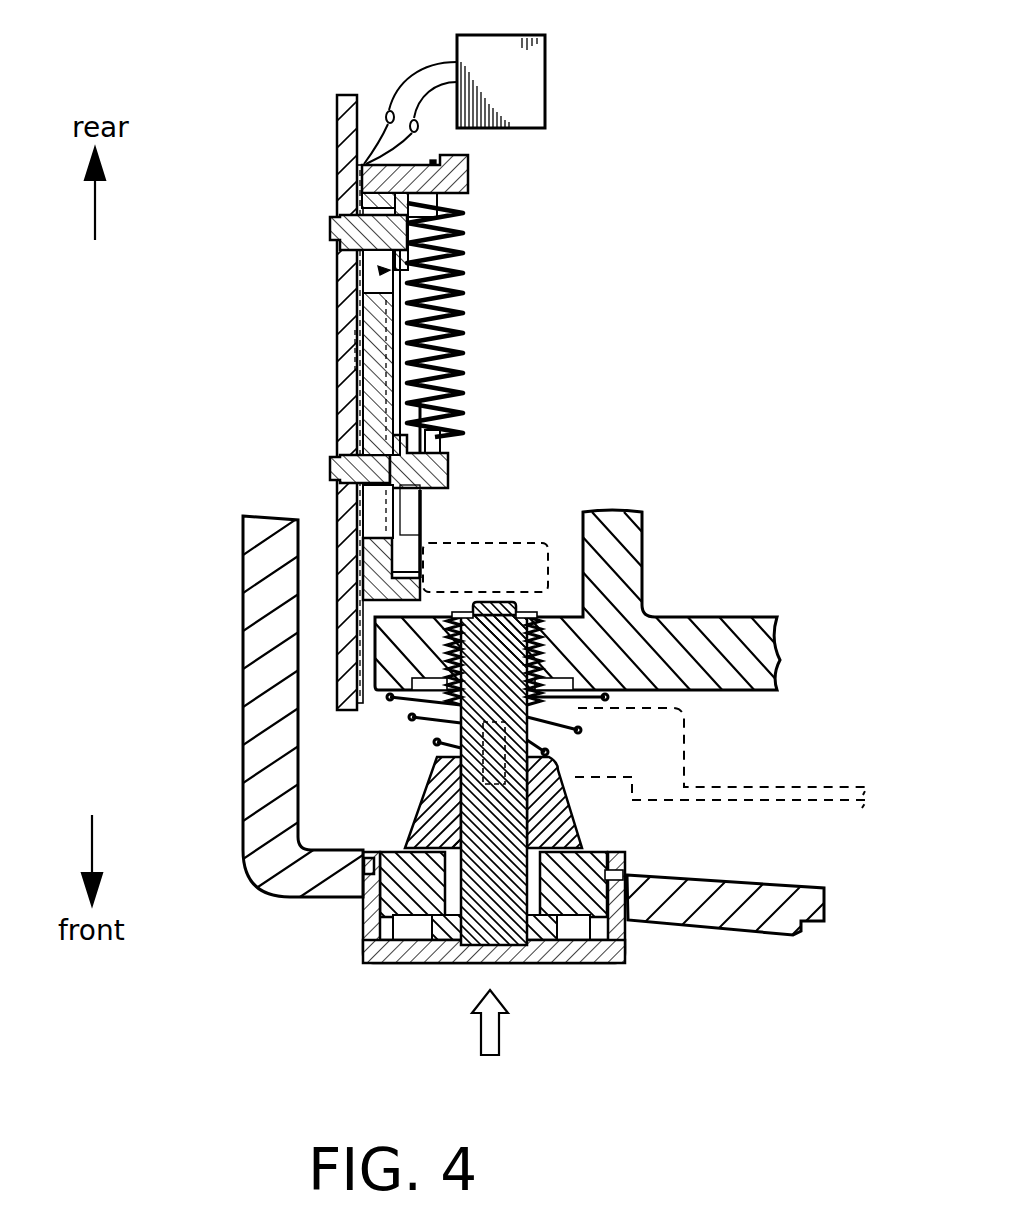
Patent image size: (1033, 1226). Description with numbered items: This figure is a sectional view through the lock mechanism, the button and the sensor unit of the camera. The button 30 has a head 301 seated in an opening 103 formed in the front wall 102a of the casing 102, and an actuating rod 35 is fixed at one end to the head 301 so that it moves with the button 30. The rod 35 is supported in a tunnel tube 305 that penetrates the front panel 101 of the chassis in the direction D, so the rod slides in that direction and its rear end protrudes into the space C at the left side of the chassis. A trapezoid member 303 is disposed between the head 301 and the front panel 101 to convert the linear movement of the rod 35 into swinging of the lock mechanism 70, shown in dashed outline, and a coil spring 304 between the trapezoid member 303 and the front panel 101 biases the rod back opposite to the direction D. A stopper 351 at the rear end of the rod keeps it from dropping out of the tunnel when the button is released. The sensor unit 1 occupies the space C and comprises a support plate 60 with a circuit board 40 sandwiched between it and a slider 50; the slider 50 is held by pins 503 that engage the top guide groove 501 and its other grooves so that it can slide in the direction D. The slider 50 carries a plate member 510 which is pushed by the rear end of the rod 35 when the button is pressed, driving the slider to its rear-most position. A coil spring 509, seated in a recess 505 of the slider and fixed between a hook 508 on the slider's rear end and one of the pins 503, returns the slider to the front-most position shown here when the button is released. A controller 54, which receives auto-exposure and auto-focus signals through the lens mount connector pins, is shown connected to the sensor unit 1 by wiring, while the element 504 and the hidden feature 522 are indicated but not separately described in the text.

The sensor unit 1 is at (110, 488).
The button 30 is at (445, 798).
The actuating rod 35 is at (518, 885).
The circuit board 40 is at (345, 390).
The slider 50 is at (532, 158).
The controller 54 is at (547, 68).
The support plate 60 is at (336, 287).
The lock mechanism 70 is at (828, 748).
The front panel 101 is at (710, 618).
The casing 102 is at (258, 752).
The front wall 102a is at (768, 928).
The opening 103 is at (370, 854).
The head 301 is at (434, 965).
The trapezoid member 303 is at (592, 825).
The coil spring 304 is at (577, 728).
The tunnel tube 305 is at (450, 790).
The stopper 351 is at (520, 612).
The top guide groove 501 is at (378, 268).
The pin 503 is at (338, 226).
The spring seat 504 is at (450, 468).
The recess 505 is at (410, 535).
The hook 508 is at (468, 192).
The coil spring 509 is at (458, 293).
The plate member 510 is at (538, 540).
The hidden slot 522 is at (352, 350).
The space C is at (598, 342).
The direction D is at (500, 1022).